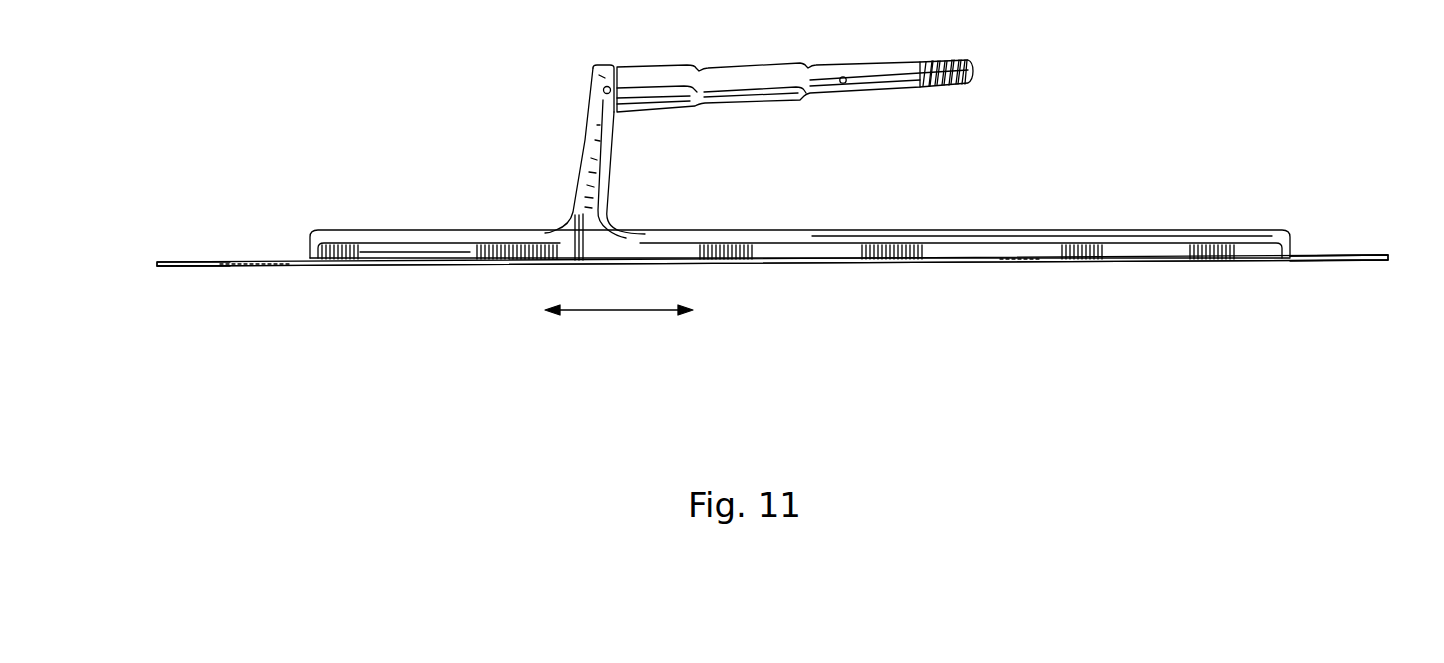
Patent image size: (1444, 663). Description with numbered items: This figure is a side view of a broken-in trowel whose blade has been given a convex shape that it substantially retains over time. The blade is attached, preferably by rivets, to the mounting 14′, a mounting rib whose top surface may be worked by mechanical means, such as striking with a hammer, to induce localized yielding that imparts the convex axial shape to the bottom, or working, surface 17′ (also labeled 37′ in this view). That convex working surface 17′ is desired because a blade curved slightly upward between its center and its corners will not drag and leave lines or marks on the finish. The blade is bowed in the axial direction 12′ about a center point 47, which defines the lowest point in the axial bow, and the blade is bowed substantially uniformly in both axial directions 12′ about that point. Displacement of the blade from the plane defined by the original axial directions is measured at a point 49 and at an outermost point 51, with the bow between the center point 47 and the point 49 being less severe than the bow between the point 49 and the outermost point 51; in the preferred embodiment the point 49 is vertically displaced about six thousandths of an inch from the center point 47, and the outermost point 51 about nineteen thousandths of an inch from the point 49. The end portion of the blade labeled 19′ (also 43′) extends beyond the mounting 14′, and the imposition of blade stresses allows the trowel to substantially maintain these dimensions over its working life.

The axial direction 12′ is at (619, 322).
The mounting 14′ is at (887, 237).
The working surface 17′ is at (1102, 262).
The blade 37′ is at (772, 263).
The blade end portion 19′ is at (1322, 257).
The blade end portion 43′ is at (1339, 255).
The center point 47 is at (835, 258).
The displacement measurement point 49 is at (392, 258).
The outermost point 51 is at (156, 267).